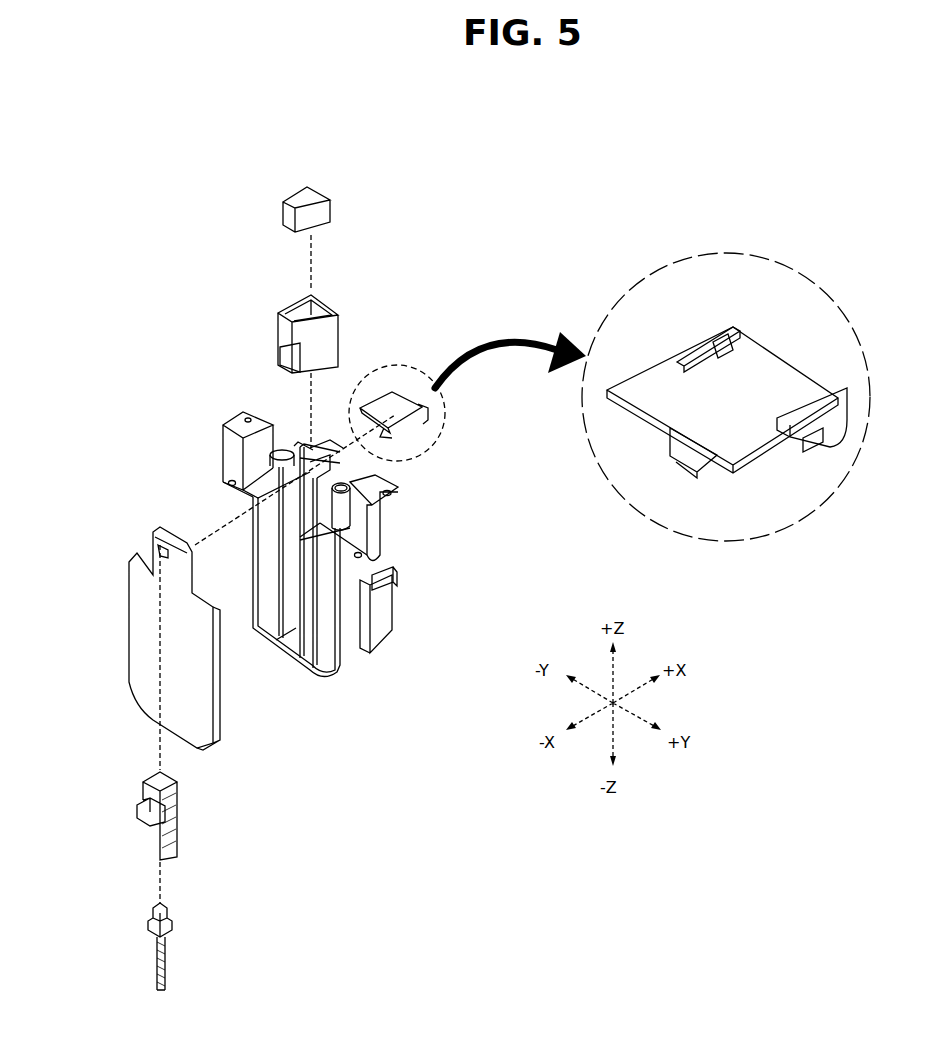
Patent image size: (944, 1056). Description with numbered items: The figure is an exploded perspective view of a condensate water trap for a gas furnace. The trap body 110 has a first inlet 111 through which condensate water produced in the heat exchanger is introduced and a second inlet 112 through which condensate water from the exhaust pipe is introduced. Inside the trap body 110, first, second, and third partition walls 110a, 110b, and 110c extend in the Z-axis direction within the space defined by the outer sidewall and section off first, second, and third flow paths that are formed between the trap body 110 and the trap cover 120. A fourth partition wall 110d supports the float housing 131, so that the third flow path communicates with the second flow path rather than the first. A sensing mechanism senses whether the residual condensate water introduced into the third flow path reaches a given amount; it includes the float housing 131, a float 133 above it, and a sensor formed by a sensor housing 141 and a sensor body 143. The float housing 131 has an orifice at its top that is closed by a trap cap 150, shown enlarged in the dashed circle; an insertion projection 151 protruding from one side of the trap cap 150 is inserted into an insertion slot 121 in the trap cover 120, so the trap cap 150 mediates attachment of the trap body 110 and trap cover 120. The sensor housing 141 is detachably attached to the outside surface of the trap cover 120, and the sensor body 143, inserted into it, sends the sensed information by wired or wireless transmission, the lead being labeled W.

The trap body 110 is at (357, 551).
The first partition wall 110a is at (322, 622).
The second partition wall 110b is at (317, 583).
The third partition wall 110c is at (316, 625).
The fourth partition wall 110d is at (313, 575).
The first inlet 111 is at (353, 480).
The second inlet 112 is at (273, 440).
The trap cover 120 is at (138, 572).
The insertion slot 121 is at (162, 537).
The float housing 131 is at (322, 333).
The float 133 is at (320, 220).
The sensor housing 141 is at (177, 803).
The sensor body 143 is at (172, 927).
The trap cap 150 is at (395, 407).
The insertion projection 151 is at (695, 462).
The wire W is at (168, 967).